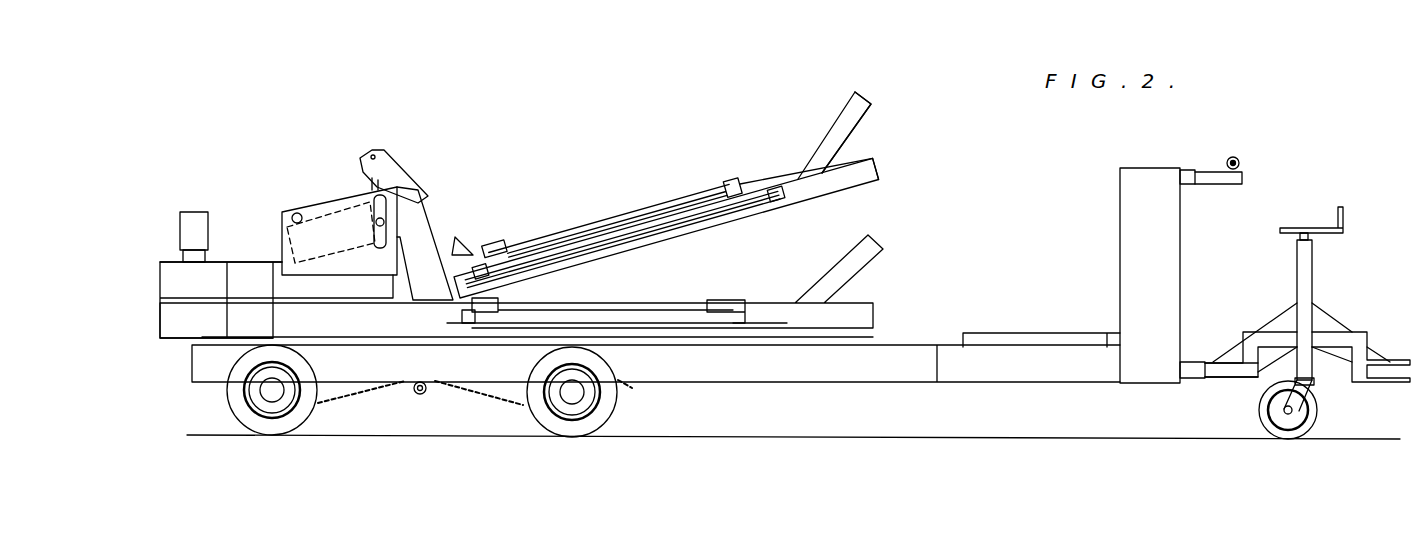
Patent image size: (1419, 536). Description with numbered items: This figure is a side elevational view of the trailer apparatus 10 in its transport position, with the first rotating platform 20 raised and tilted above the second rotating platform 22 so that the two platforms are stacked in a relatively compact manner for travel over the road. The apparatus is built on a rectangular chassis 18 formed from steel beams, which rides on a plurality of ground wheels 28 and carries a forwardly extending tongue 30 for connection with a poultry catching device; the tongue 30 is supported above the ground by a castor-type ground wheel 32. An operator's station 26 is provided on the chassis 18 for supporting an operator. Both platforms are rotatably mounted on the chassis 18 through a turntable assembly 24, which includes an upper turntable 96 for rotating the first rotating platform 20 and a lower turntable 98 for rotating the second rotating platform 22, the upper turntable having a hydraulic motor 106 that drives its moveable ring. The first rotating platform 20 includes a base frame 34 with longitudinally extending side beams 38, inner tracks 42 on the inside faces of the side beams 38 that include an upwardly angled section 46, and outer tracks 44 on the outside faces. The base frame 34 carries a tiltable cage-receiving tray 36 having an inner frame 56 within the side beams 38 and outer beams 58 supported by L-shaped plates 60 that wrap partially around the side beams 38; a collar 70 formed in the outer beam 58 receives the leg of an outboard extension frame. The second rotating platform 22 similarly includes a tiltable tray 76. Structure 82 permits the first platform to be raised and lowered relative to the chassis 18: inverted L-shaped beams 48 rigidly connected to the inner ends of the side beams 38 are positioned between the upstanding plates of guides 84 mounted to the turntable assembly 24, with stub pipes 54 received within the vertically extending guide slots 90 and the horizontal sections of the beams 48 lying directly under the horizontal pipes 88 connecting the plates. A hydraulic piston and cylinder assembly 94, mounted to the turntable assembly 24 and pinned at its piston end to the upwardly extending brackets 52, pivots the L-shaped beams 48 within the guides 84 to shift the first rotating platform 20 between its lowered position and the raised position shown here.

The trailer apparatus 10 is at (572, 112).
The chassis 18 is at (765, 374).
The first rotating platform 20 is at (884, 157).
The second rotating platform 22 is at (887, 306).
The turntable assembly 24 is at (253, 258).
The operator's station 26 is at (1045, 333).
The ground wheels 28 is at (245, 421).
The tongue 30 is at (1387, 343).
The castor-type ground wheel 32 is at (1265, 405).
The base frame 34 is at (878, 182).
The cage-receiving tray 36 is at (632, 196).
The side beams 38 is at (778, 188).
The inner tracks 42 is at (793, 167).
The outer tracks 44 is at (672, 230).
The upwardly angled section 46 is at (858, 109).
The L-shaped beams 48 is at (425, 195).
The brackets 52 is at (398, 173).
The stub pipe 54 is at (376, 222).
The inner frame 56 is at (673, 203).
The outer beams 58 is at (610, 238).
The L-shaped plates 60 is at (495, 250).
The collar 70 is at (766, 200).
The tiltable tray 76 is at (724, 298).
The raising and lowering structure 82 is at (287, 158).
The guides 84 is at (322, 188).
The pipe 88 is at (294, 214).
The guide slot 90 is at (436, 232).
The hydraulic piston and cylinder assembly 94 is at (372, 183).
The first upper turntable 96 is at (157, 260).
The second lower turntable 98 is at (176, 350).
The hydraulic motor 106 is at (190, 212).